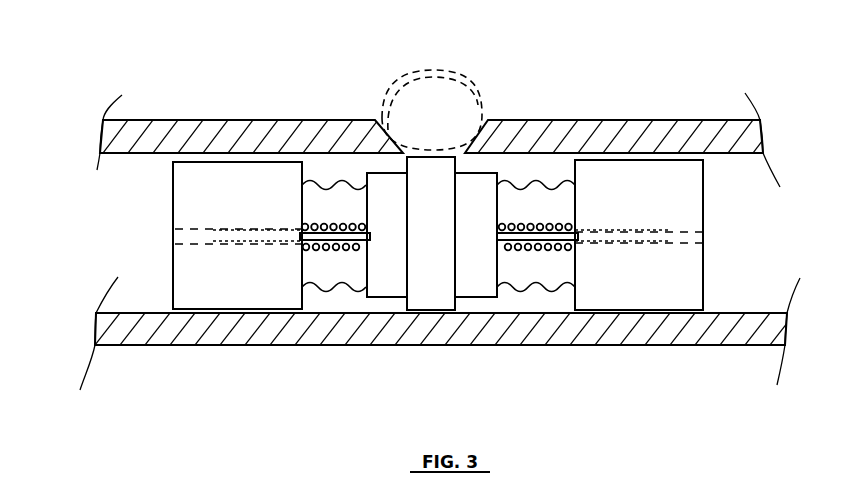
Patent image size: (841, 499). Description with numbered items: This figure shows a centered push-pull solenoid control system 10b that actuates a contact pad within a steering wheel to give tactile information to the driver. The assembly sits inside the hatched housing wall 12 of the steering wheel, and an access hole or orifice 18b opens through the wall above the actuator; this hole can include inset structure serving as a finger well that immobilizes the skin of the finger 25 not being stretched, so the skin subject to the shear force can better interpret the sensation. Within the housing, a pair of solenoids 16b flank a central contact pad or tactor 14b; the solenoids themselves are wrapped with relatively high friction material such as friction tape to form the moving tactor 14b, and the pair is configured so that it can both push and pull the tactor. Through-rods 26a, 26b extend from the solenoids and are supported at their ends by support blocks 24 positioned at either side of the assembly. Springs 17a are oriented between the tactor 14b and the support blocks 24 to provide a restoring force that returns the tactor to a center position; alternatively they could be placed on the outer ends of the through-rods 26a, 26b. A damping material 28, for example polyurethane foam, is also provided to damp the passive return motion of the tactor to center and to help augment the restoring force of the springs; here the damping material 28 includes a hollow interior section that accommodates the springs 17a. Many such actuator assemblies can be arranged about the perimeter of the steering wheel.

The fluid pump assembly 10b is at (148, 78).
The housing wall 12 is at (195, 120).
The finger 25 is at (368, 100).
The access hole 18b is at (494, 106).
The tactor 14b is at (447, 166).
The solenoids 16b is at (470, 287).
The support blocks 24 is at (232, 292).
The damping material 28 is at (320, 287).
The springs 17a is at (335, 273).
The through-rod 26a is at (214, 220).
The through-rod 26b is at (668, 228).